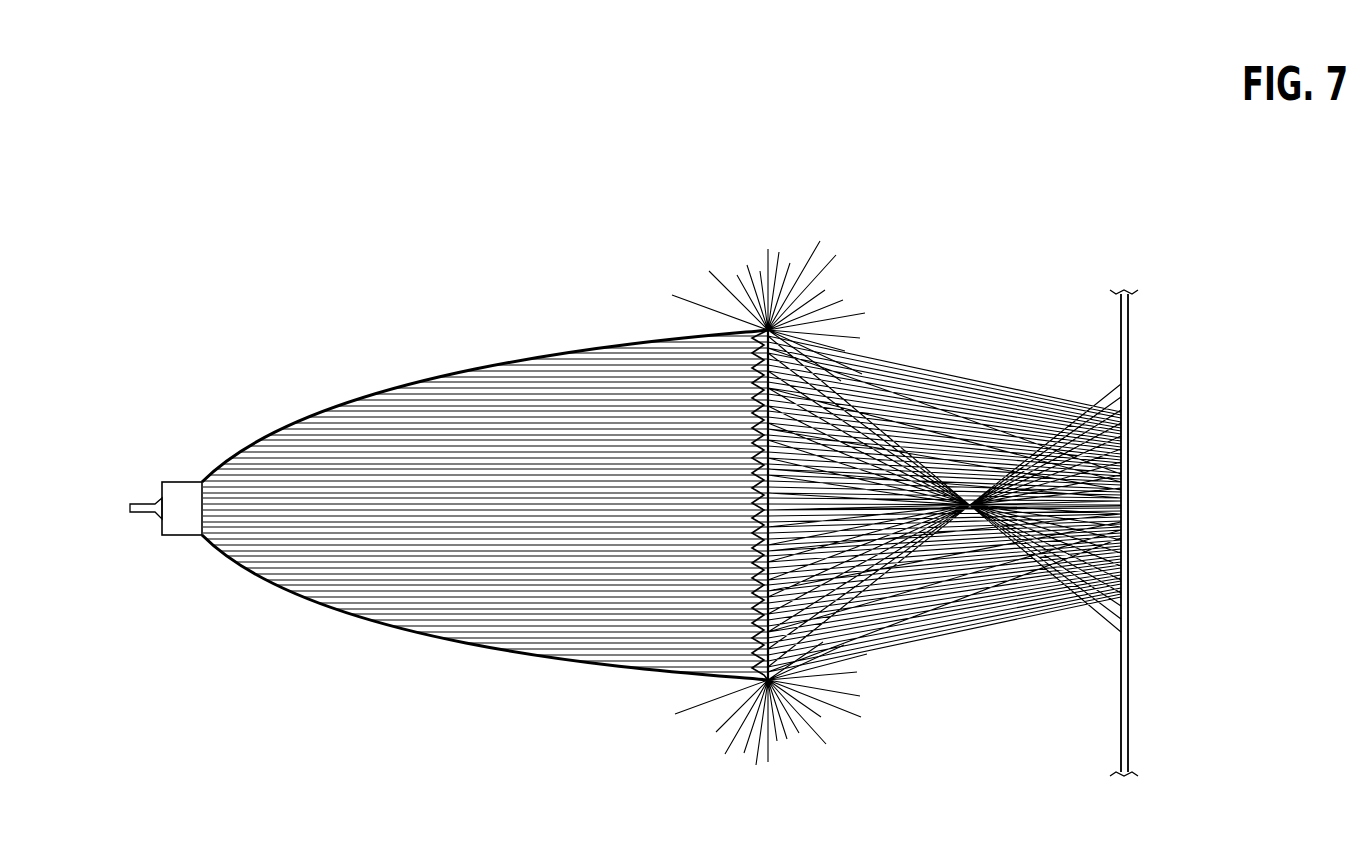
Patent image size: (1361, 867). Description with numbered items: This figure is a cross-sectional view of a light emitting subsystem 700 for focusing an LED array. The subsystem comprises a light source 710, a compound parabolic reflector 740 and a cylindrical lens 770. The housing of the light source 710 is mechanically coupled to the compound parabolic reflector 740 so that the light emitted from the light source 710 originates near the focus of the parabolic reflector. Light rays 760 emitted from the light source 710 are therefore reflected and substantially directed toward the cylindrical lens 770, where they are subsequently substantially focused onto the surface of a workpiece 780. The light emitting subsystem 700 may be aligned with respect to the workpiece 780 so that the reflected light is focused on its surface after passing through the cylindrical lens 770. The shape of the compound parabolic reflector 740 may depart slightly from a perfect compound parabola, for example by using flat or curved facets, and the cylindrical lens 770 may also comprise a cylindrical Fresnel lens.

The light emitting subsystem 700 is at (308, 130).
The light source 710 is at (192, 537).
The compound parabolic reflector 740 is at (492, 640).
The light rays 760 is at (912, 613).
The cylindrical lens 770 is at (760, 681).
The workpiece 780 is at (1130, 622).